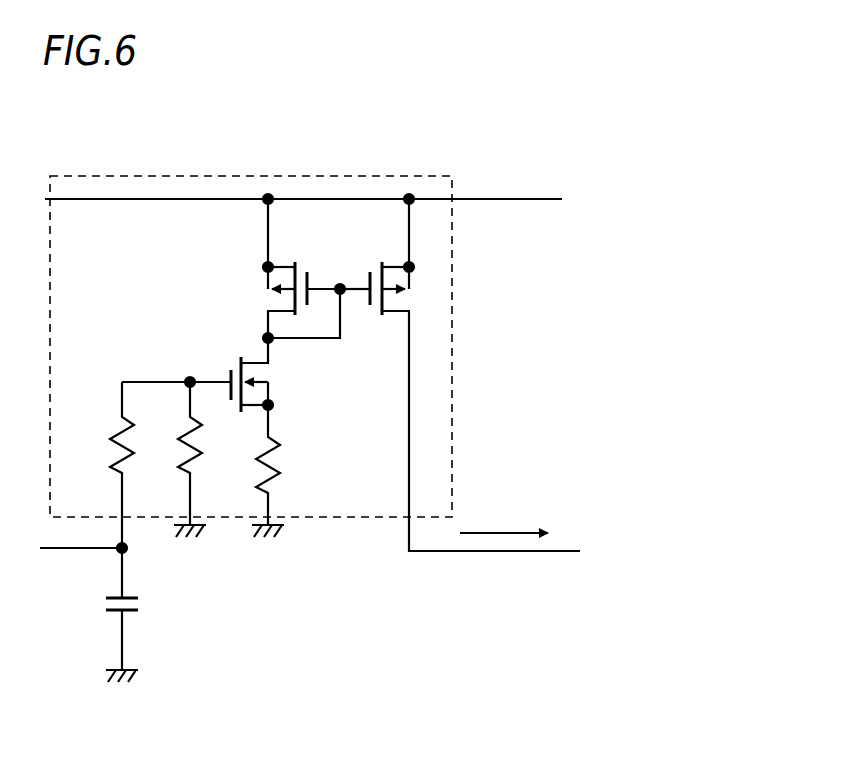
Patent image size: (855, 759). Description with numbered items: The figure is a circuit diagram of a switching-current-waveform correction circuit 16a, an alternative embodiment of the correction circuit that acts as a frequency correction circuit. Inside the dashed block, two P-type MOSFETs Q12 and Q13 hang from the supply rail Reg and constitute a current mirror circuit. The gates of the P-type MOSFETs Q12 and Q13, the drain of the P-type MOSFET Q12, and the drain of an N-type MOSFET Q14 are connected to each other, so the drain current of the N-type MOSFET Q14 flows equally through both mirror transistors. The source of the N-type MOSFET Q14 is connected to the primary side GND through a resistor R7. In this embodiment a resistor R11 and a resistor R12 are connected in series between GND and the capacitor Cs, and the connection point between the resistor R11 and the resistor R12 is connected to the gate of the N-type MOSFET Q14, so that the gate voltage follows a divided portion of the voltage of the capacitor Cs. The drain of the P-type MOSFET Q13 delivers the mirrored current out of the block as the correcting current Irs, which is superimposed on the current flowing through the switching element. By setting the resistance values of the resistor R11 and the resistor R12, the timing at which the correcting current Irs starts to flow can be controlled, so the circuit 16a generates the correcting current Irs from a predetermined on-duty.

The switching-current-waveform correction circuit 16a is at (305, 177).
The P-type MOSFET Q12 is at (304, 271).
The P-type MOSFET Q13 is at (460, 375).
The N-type MOSFET Q14 is at (224, 375).
The resistor R12 is at (96, 467).
The resistor R11 is at (213, 459).
The resistor R7 is at (285, 471).
The capacitor Cs is at (107, 615).
The regulated voltage line Reg is at (335, 197).
The correcting current Irs is at (504, 517).